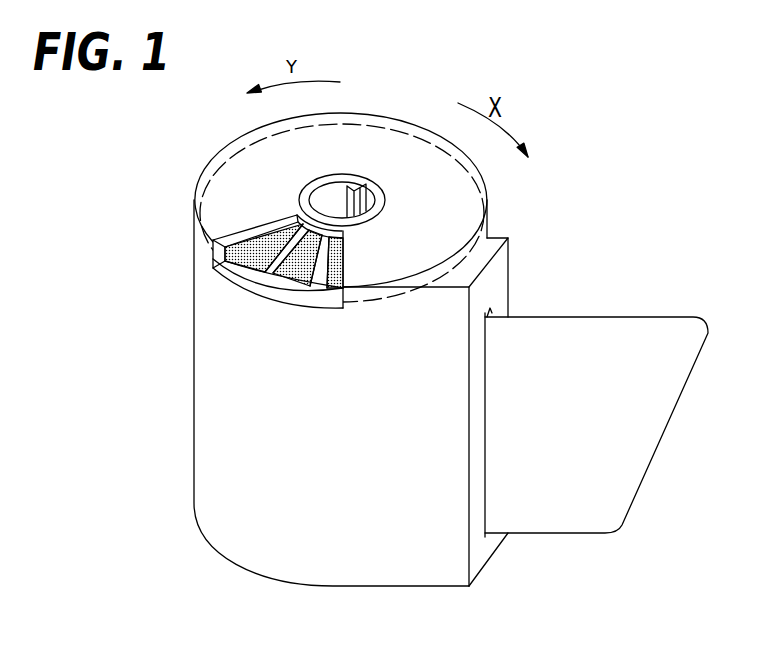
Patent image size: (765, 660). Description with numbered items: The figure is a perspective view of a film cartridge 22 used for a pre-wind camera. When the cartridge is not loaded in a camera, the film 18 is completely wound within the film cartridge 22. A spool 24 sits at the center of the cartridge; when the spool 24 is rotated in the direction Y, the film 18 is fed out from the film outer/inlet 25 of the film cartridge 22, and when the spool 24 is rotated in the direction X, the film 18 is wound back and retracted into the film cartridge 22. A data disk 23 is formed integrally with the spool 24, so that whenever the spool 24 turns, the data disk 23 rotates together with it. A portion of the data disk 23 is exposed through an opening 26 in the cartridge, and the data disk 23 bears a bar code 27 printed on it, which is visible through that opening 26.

The film 18 is at (588, 335).
The film cartridge 22 is at (212, 472).
The data disk 23 is at (312, 293).
The spool 24 is at (347, 187).
The film outer/inlet 25 is at (485, 480).
The opening 26 is at (256, 247).
The bar code 27 is at (267, 268).